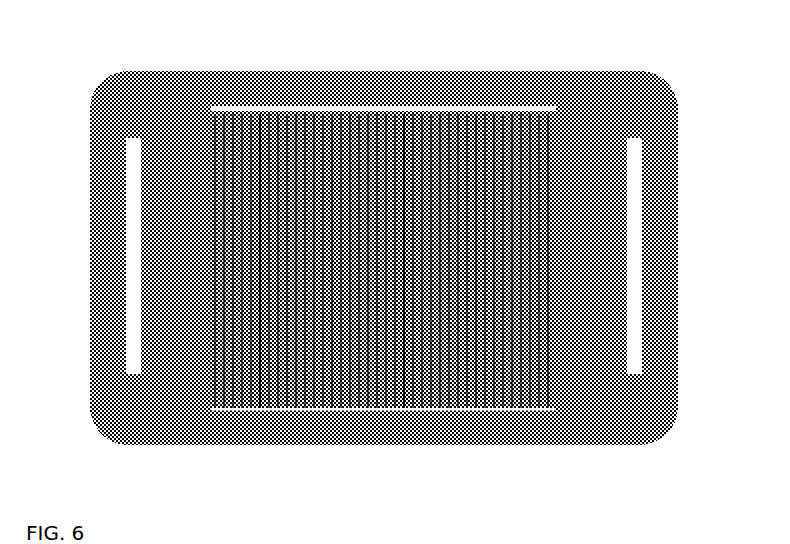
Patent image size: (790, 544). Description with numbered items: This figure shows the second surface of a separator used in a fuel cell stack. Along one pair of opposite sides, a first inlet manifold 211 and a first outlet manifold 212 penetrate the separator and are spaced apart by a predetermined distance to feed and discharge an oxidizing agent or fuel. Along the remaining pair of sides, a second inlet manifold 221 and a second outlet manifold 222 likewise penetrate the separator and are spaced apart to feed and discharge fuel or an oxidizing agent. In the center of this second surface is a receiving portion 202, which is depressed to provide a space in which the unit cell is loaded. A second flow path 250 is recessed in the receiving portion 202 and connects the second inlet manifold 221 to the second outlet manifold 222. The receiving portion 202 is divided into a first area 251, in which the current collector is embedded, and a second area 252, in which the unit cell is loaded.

The receiving portion 202 is at (315, 355).
The first inlet manifold 211 is at (128, 150).
The first outlet manifold 212 is at (624, 150).
The second inlet manifold 221 is at (463, 95).
The second outlet manifold 222 is at (397, 400).
The second flow path 250 is at (320, 143).
The first area 251 is at (255, 140).
The second area 252 is at (400, 112).